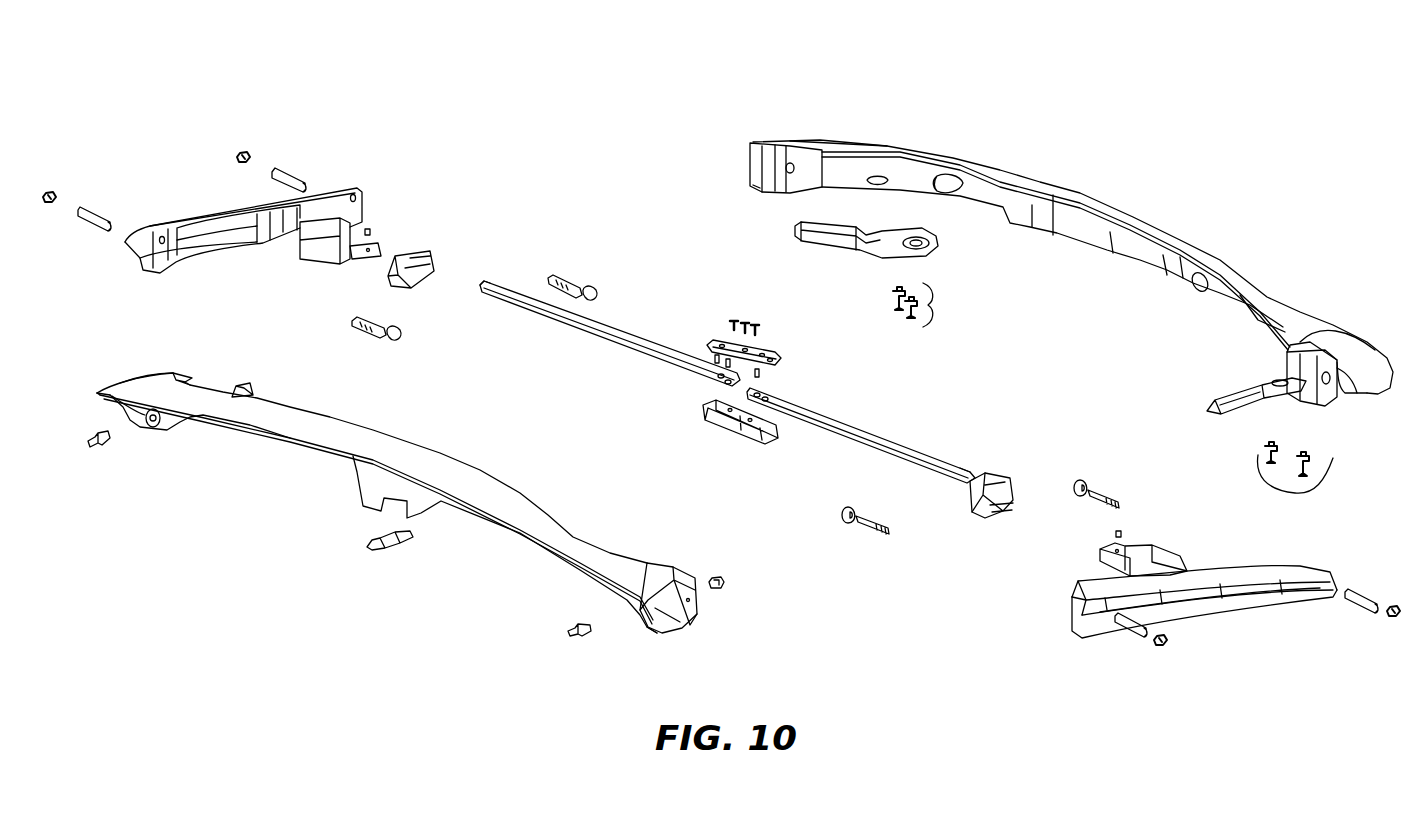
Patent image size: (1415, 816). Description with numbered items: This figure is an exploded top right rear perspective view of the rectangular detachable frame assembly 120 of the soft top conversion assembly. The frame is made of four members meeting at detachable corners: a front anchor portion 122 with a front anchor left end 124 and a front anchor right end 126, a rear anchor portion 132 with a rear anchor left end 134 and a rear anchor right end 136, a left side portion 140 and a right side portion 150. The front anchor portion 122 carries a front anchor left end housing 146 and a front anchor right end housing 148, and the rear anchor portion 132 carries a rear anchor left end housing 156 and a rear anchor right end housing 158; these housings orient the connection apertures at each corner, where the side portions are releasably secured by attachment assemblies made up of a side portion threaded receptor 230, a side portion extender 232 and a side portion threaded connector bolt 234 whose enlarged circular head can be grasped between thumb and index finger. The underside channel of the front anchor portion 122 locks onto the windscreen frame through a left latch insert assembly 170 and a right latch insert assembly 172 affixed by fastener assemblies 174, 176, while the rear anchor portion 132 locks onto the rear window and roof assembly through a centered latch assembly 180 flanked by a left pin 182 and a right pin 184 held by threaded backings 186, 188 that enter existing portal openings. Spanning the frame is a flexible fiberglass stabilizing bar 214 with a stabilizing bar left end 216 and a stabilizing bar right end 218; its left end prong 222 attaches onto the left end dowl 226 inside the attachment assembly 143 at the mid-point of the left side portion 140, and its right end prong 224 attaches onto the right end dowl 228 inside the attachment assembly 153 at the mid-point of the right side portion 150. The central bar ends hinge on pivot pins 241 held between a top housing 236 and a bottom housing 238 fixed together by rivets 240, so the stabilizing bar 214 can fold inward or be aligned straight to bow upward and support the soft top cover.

The rectangular detachable frame assembly 120 is at (1097, 131).
The front anchor portion 122 is at (1113, 207).
The front anchor left end 124 is at (815, 142).
The front anchor right end 126 is at (1342, 340).
The rear anchor portion 132 is at (257, 433).
The rear anchor left end 134 is at (108, 392).
The rear anchor right end 136 is at (647, 623).
The left side portion 140 is at (213, 207).
The attachment assembly 143 is at (350, 263).
The front anchor left end housing 146 is at (763, 167).
The front anchor right end housing 148 is at (1298, 383).
The right side portion 150 is at (1225, 640).
The attachment assembly 153 is at (1133, 533).
The rear anchor left end housing 156 is at (167, 375).
The rear anchor right end housing 158 is at (680, 607).
The left latch insert assembly 170 is at (795, 232).
The right latch insert assembly 172 is at (1240, 413).
The fastener assembly 174 is at (932, 305).
The fastener assembly 176 is at (1299, 485).
The latch assembly 180 is at (390, 550).
The left pin 182 is at (98, 447).
The right pin 184 is at (587, 640).
The threaded backing 186 is at (240, 385).
The threaded backing 188 is at (724, 581).
The flexible stabilizing bar 214 is at (595, 338).
The stabilizing bar left end 216 is at (490, 280).
The stabilizing bar right end 218 is at (967, 473).
The stabilizing bar left end prong 222 is at (420, 250).
The stabilizing bar right end prong 224 is at (973, 500).
The stabilizing bar left end dowl 226 is at (370, 227).
The stabilizing bar right end dowl 228 is at (1112, 535).
The side portion threaded receptor 230 is at (50, 190).
The side portion extender 232 is at (90, 223).
The side portion threaded connector bolt 234 is at (563, 275).
The top housing 236 is at (757, 352).
The bottom housing 238 is at (727, 441).
The rivets 240 is at (733, 308).
The pivot pins 241 is at (765, 384).